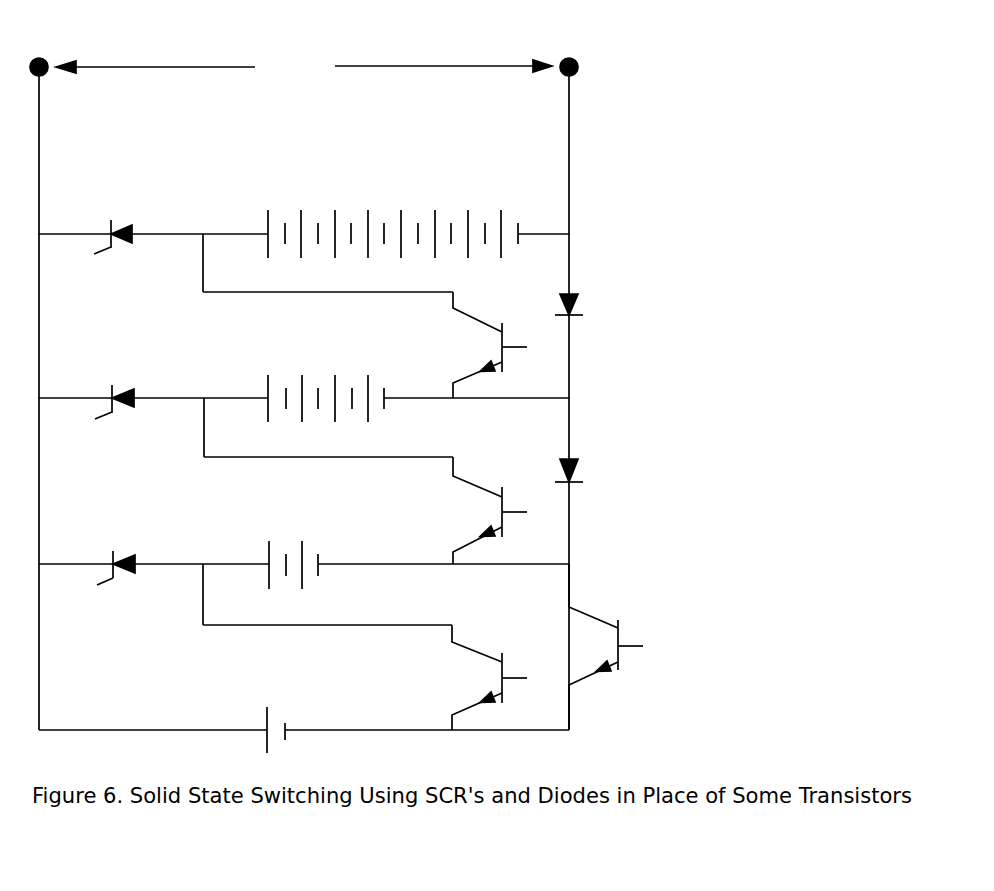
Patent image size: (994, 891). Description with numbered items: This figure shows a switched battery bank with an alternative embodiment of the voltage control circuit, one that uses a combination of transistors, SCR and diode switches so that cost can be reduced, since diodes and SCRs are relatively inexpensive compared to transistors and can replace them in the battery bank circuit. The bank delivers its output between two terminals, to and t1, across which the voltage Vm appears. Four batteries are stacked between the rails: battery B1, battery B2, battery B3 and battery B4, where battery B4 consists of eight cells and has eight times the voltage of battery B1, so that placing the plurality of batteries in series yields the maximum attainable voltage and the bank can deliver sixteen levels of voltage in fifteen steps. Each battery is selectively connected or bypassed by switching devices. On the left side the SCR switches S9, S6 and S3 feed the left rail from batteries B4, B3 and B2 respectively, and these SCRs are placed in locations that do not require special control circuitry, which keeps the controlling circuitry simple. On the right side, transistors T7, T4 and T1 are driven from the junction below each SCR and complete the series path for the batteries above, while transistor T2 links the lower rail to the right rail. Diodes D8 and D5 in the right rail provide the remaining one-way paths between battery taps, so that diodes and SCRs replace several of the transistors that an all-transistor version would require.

The terminal t0 to is at (38, 52).
The terminal t1 is at (567, 53).
The voltage Vm between terminals Vm is at (304, 66).
The battery B1 is at (280, 711).
The battery B2 is at (292, 549).
The battery B3 is at (324, 379).
The battery B4 is at (391, 217).
The switch S3 is at (116, 586).
The switch S6 is at (114, 419).
The switch S9 is at (113, 257).
The transistor T1 is at (463, 677).
The transistor T2 is at (594, 647).
The transistor T4 is at (468, 510).
The transistor T7 is at (469, 345).
The diode D5 is at (597, 470).
The diode D8 is at (595, 305).